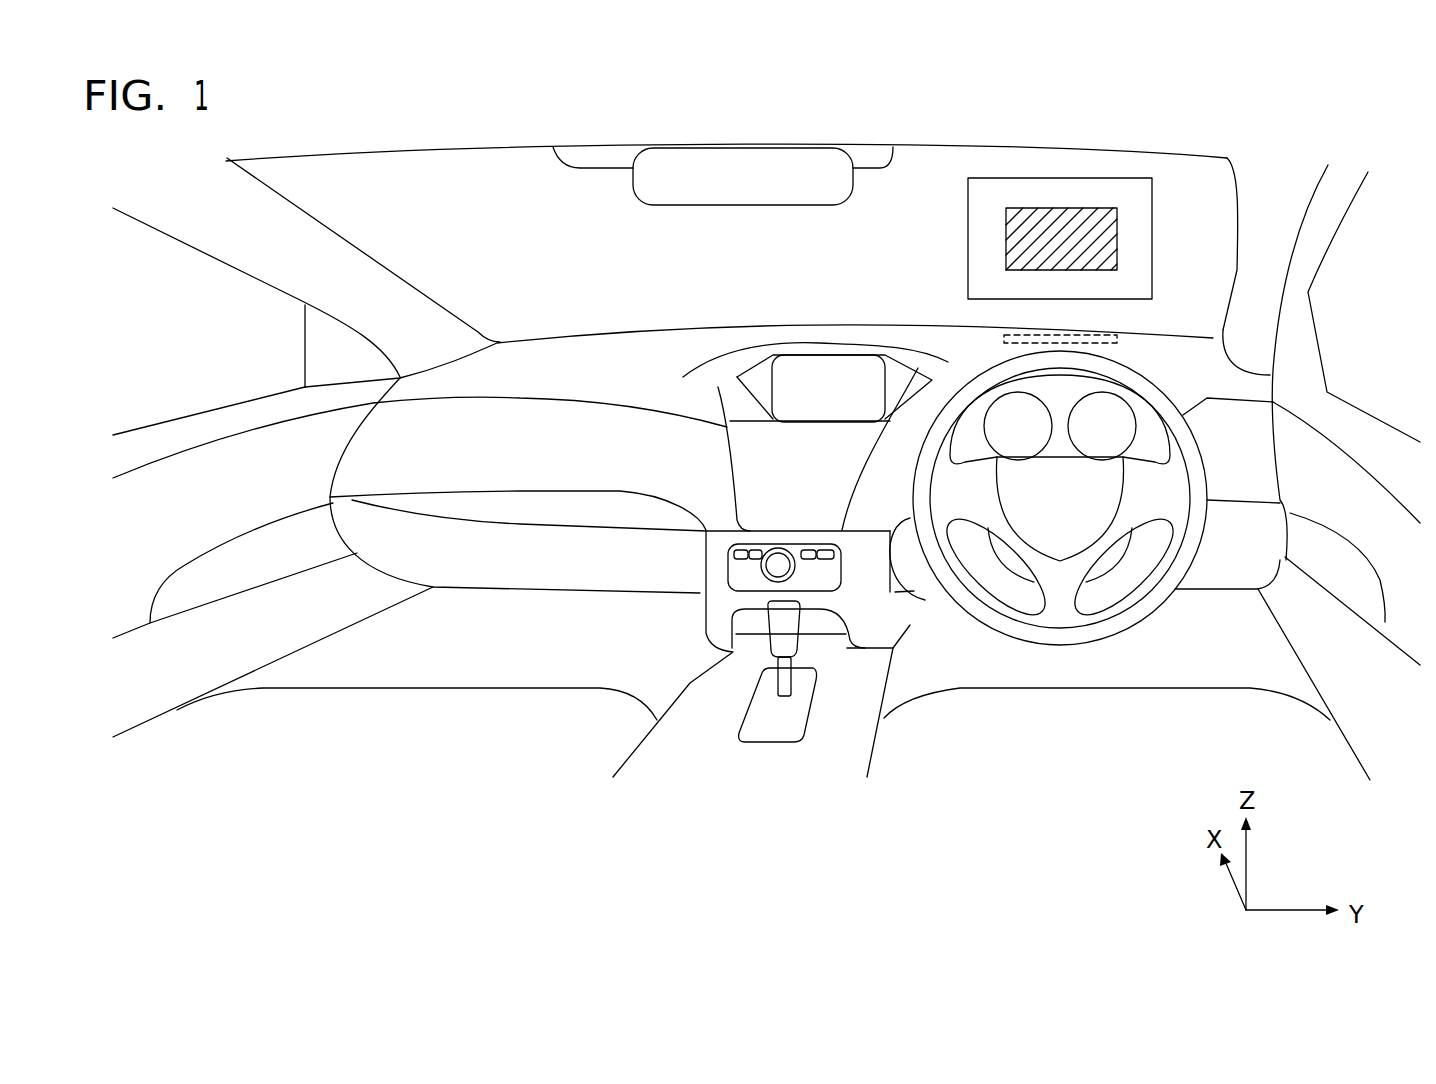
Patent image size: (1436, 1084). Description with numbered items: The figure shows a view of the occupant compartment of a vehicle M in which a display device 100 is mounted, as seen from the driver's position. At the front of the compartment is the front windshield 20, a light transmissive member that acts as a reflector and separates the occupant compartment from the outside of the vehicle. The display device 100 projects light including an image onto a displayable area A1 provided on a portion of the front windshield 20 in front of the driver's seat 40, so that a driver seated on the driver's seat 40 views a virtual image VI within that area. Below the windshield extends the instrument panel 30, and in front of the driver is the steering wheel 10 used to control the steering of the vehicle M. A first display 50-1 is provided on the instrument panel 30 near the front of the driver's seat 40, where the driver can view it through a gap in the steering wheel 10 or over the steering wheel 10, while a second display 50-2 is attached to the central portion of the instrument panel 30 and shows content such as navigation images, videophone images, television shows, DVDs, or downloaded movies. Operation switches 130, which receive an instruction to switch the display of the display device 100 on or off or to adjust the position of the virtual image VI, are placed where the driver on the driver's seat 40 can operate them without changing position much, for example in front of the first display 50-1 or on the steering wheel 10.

The steering wheel 10 is at (1147, 607).
The front windshield 20 is at (841, 275).
The instrument panel 30 is at (674, 365).
The driver's seat 40 is at (1123, 754).
The first display 50-1 is at (1010, 405).
The second display 50-2 is at (858, 402).
The display device 100 is at (1117, 340).
The operation switches 130 is at (1150, 448).
The displayable area A1 is at (968, 202).
The virtual image VI is at (1006, 247).
The vehicle M is at (613, 652).